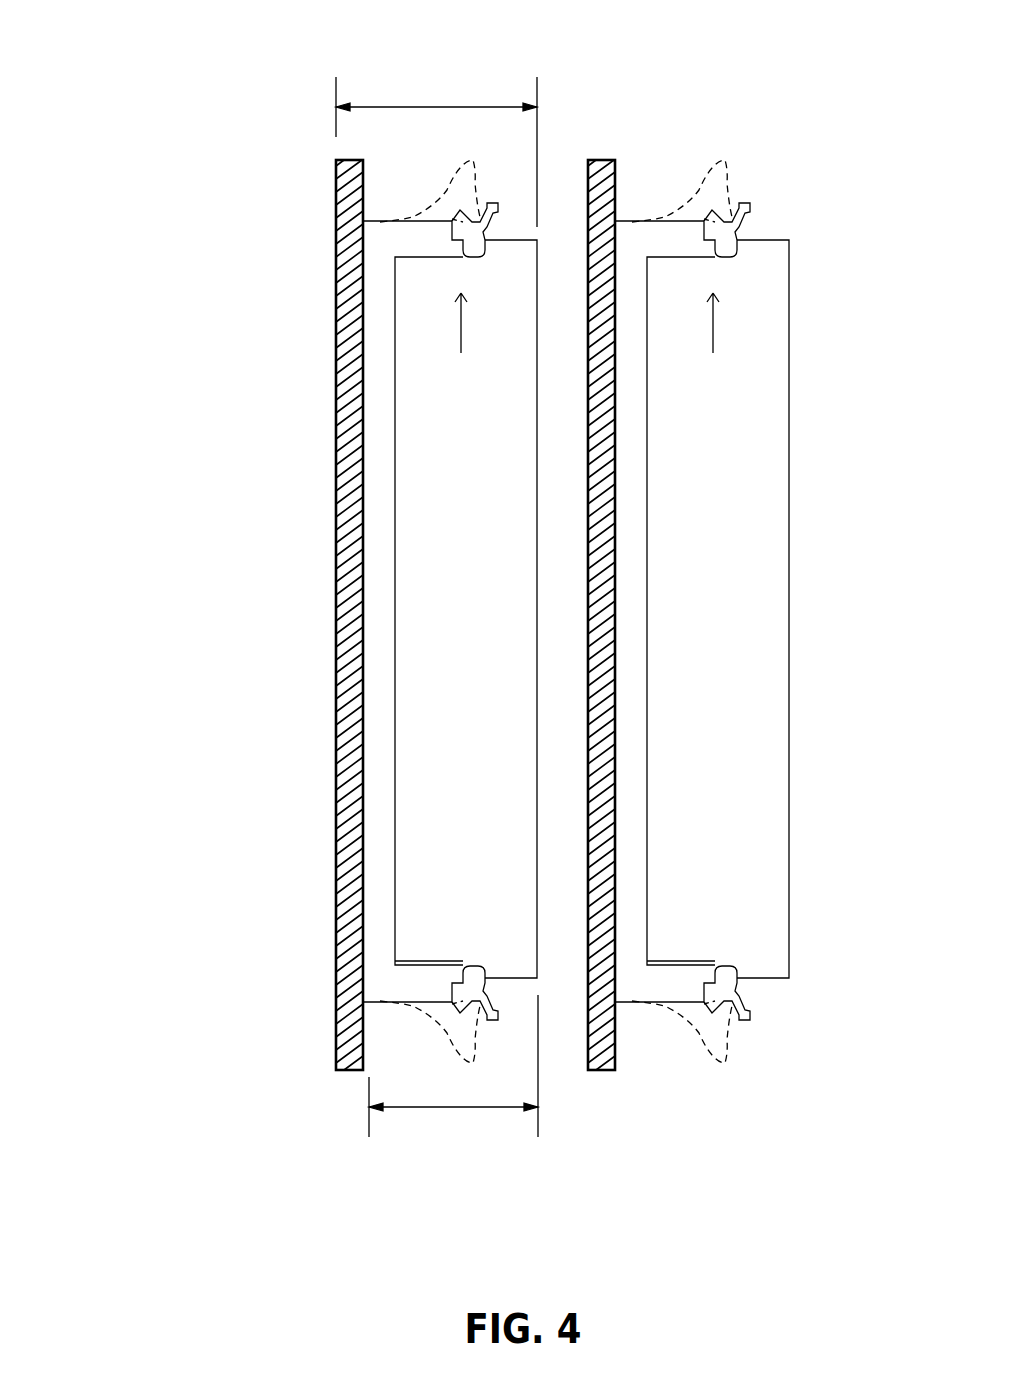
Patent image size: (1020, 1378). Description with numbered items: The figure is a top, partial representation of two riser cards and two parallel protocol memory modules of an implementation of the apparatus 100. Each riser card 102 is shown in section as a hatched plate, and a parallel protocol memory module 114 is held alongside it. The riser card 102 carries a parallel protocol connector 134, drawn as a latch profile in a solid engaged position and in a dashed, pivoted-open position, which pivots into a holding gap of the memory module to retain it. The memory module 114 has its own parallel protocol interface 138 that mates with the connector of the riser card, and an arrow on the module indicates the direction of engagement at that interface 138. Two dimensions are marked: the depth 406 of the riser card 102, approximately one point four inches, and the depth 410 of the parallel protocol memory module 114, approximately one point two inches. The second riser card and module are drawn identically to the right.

The apparatus 100 is at (73, 1236).
The riser card 102 is at (291, 468).
The parallel protocol memory module 114 is at (450, 545).
The parallel protocol connector 134 is at (420, 171).
The parallel protocol interface 138 is at (587, 348).
The depth of the riser card 406 is at (503, 107).
The depth of the parallel protocol memory module 410 is at (472, 1107).